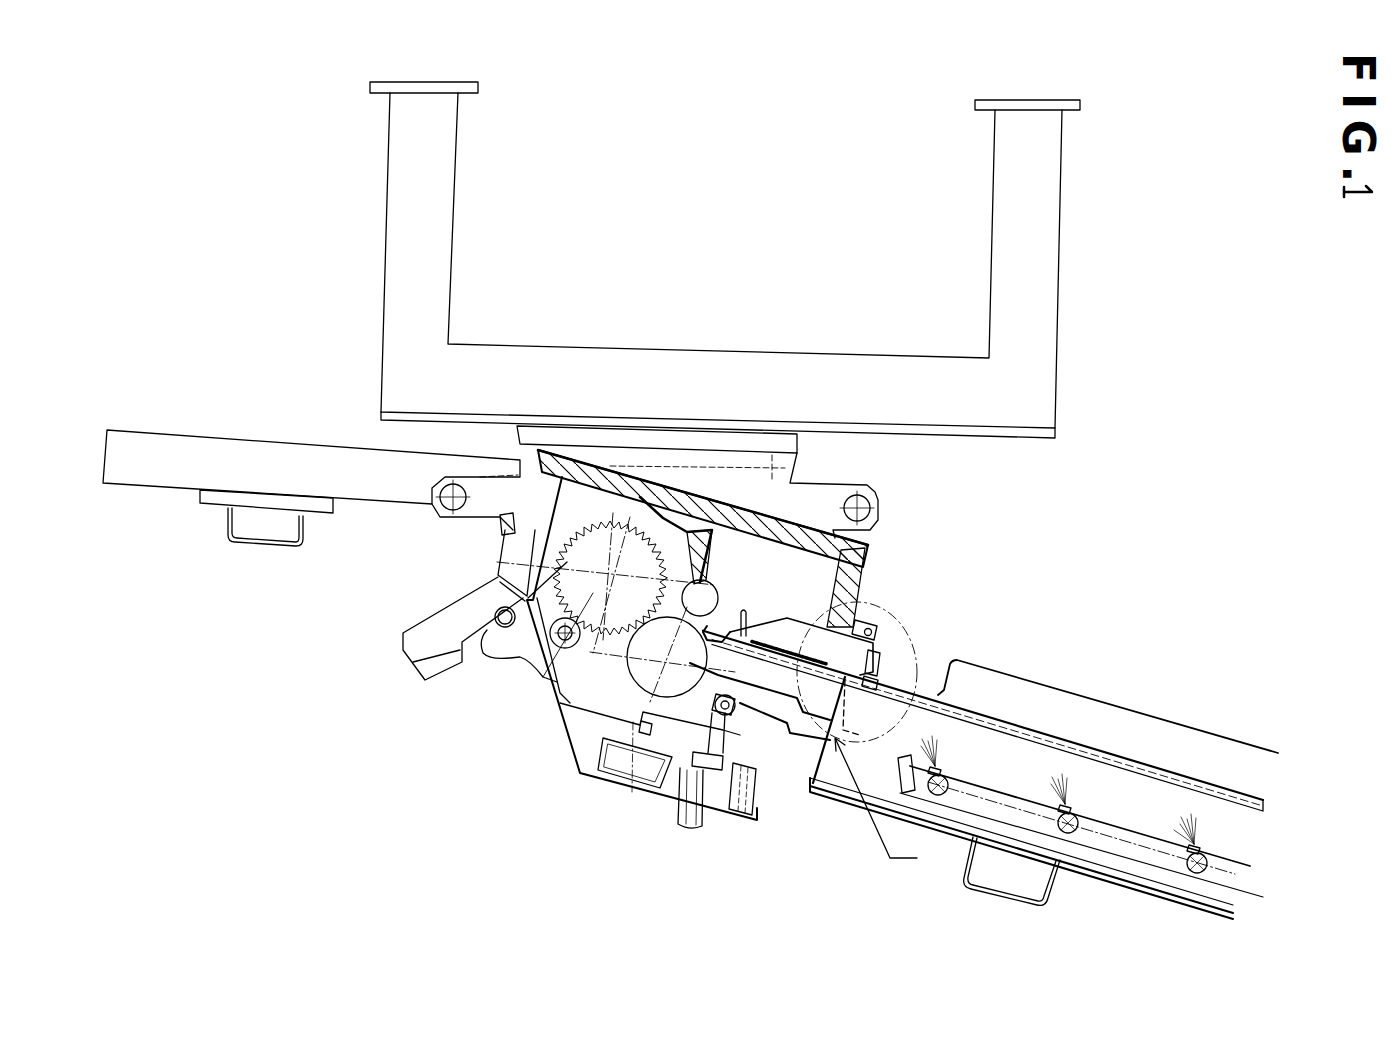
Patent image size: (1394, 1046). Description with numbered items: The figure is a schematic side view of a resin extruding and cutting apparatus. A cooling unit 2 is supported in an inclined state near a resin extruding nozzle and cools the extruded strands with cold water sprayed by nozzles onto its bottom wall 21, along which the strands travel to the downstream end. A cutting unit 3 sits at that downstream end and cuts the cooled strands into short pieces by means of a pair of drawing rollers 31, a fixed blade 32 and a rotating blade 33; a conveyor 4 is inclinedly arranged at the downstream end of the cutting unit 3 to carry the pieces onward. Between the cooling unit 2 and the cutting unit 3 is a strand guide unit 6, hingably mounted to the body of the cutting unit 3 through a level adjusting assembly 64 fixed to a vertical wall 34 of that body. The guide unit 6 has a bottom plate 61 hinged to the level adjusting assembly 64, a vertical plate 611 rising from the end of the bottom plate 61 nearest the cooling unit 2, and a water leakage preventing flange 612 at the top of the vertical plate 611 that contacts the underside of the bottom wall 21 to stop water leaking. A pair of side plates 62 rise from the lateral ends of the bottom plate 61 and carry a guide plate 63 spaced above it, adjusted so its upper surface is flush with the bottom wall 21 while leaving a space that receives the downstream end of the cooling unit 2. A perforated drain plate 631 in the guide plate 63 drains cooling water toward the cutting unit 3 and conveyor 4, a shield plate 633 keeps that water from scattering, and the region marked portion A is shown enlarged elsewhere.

The cooling unit 2 is at (1107, 780).
The bottom wall 21 is at (1047, 733).
The cutting unit 3 is at (612, 814).
The drawing rollers 31 is at (597, 727).
The fixed blade 32 is at (712, 517).
The rotating blade 33 is at (543, 677).
The vertical wall 34 is at (826, 555).
The conveyor 4 is at (230, 462).
The strand guide unit 6 is at (788, 590).
The bottom plate 61 is at (842, 618).
The vertical plate 611 is at (880, 668).
The water leakage preventing flange 612 is at (874, 675).
The side plates 62 is at (808, 698).
The guide plate 63 is at (708, 700).
The perforated drain plate 631 is at (735, 700).
The shield plate 633 is at (757, 578).
The level adjusting assembly 64 is at (882, 624).
The portion A is at (876, 812).